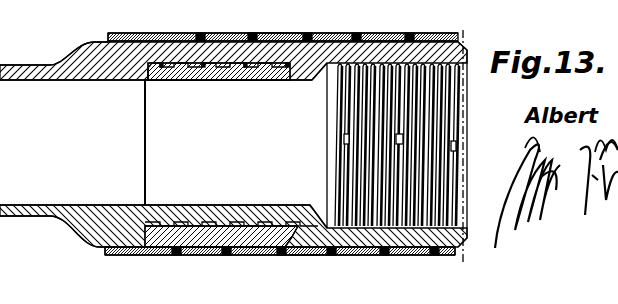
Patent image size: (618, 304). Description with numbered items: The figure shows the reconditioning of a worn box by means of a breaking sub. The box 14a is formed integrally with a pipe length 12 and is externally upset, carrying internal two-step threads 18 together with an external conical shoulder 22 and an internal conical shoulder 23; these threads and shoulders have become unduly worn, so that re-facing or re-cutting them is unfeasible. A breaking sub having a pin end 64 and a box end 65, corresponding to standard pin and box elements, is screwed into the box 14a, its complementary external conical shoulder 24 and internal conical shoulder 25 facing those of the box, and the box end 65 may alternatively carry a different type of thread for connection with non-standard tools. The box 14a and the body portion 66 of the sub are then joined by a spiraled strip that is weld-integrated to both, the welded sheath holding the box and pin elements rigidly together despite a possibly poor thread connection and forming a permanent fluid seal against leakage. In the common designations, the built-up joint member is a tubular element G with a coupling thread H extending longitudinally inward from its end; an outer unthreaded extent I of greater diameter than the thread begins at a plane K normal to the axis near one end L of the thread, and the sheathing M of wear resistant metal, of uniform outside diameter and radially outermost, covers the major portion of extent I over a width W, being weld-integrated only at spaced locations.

The pipe length 12 is at (15, 63).
The box 14a is at (86, 8).
The box end 65 is at (208, 33).
The width of coating W is at (303, 33).
The outer unthreaded longitudinal extent I is at (380, 41).
The tubular element G is at (392, 41).
The plane K is at (462, 32).
The coupling thread H is at (426, 100).
The end of coupling thread L is at (462, 149).
The sheathing M is at (410, 254).
The body portion 66 is at (305, 253).
The external conical shoulder 22 is at (298, 240).
The internal conical shoulder 25 is at (133, 205).
The internal conical shoulder 23 is at (152, 82).
The pin end 64 is at (170, 82).
The internal two-step thread 18 is at (219, 64).
The external conical shoulder 24 is at (278, 54).